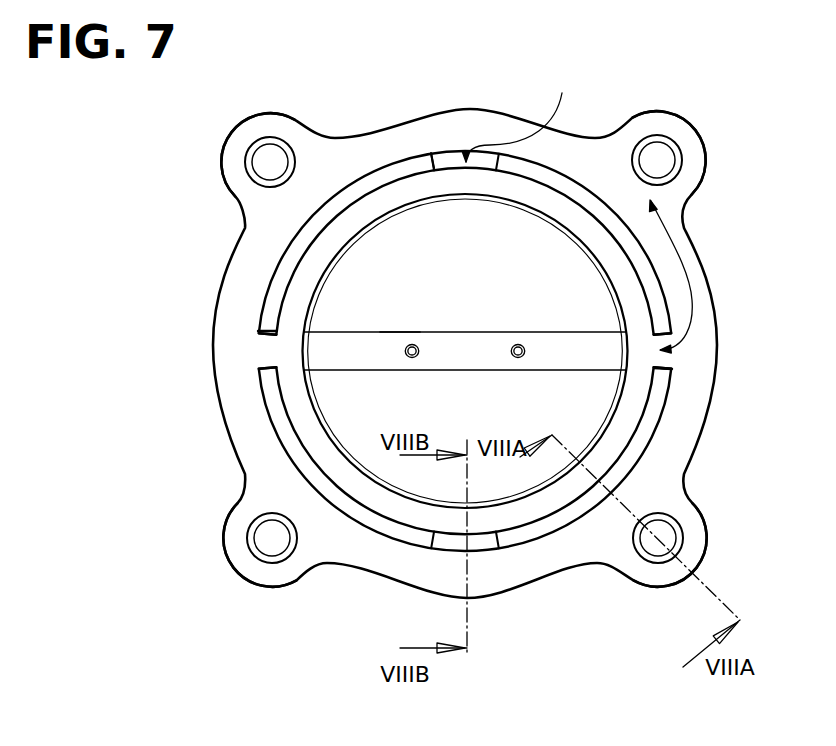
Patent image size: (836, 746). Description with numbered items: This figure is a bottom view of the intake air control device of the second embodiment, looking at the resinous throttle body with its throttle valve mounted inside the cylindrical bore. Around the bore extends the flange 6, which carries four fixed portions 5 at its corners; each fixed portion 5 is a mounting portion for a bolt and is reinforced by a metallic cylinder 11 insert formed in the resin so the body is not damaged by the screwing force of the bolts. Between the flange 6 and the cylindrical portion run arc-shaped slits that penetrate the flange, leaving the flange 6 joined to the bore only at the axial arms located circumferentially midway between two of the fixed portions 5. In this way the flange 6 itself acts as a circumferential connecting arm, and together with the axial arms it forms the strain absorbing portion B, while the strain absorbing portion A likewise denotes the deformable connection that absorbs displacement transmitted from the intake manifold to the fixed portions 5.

The fixed portions 5 is at (250, 133).
The flange 6 is at (538, 572).
The metallic cylinders 11 is at (245, 162).
The strain absorbing portion A is at (687, 288).
The strain absorbing portion B is at (519, 114).